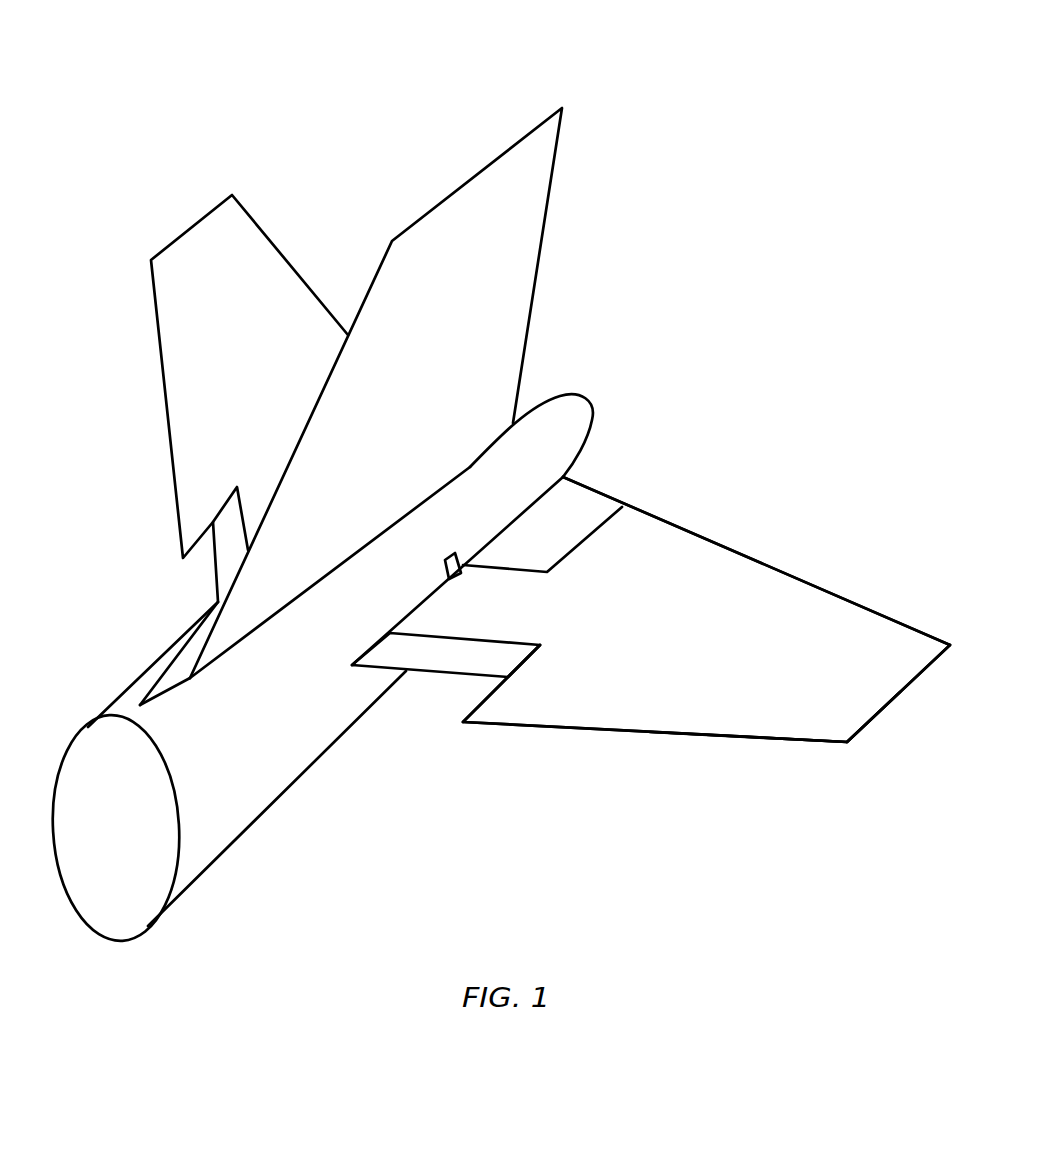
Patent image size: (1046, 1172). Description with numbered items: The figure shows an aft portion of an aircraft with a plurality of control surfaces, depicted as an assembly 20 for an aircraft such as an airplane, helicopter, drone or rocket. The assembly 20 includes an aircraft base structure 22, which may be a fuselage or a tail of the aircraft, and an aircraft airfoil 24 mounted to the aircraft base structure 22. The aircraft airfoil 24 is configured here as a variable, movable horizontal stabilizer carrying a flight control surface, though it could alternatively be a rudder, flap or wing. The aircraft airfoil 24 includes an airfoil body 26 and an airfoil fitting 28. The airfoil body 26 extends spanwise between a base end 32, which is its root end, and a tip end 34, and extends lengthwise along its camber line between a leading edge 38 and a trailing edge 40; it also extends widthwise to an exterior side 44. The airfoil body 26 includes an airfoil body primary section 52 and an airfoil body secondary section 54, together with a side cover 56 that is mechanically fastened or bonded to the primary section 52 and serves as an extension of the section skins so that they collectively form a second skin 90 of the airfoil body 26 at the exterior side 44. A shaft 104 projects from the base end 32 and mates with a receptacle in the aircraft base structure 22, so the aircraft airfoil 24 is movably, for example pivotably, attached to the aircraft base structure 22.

The assembly 20 is at (497, 478).
The aircraft base structure 22 is at (319, 669).
The aircraft airfoil 24 is at (842, 750).
The airfoil body 26 is at (896, 620).
The airfoil fitting 28 is at (447, 569).
The base end 32 is at (540, 490).
The tip end 34 is at (872, 722).
The leading edge 38 is at (675, 738).
The trailing edge 40 is at (706, 663).
The exterior side 44 is at (706, 609).
The second skin 90 is at (819, 617).
The airfoil body primary section 52 is at (518, 725).
The airfoil body secondary section 54 is at (438, 674).
The side cover 56 is at (571, 508).
The shaft 104 is at (438, 577).